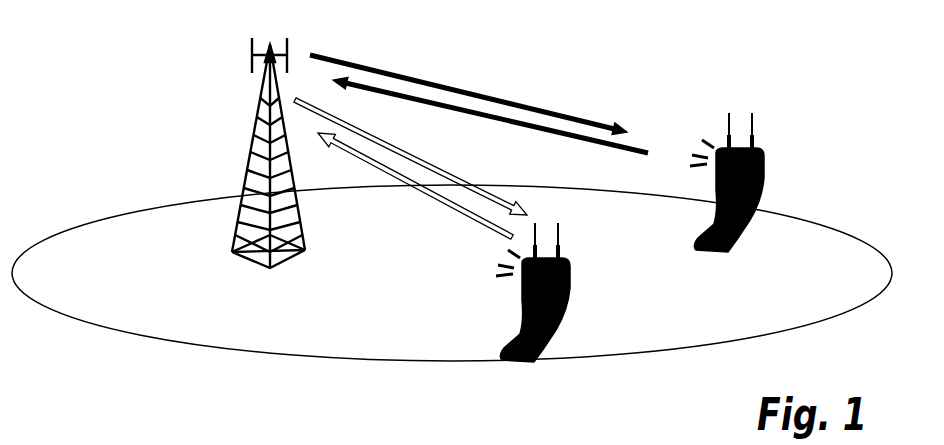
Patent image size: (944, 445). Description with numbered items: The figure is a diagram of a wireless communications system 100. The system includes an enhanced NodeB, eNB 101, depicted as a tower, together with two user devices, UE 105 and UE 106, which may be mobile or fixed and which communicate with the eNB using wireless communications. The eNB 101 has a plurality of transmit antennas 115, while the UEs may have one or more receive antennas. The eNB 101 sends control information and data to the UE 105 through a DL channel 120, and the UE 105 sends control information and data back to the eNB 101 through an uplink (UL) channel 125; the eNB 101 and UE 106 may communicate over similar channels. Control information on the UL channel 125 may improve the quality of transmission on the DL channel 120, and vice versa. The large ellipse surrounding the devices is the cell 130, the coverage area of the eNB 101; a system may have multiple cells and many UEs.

The wireless communications system 100 is at (105, 32).
The enhanced NodeB (eNB) 101 is at (234, 240).
The transmit antennas 115 is at (250, 50).
The DL channel 120 is at (471, 84).
The uplink (UL) channel 125 is at (487, 120).
The User Equipment (UE) 105 is at (770, 167).
The UE 106 is at (578, 278).
The cell 130 is at (384, 357).